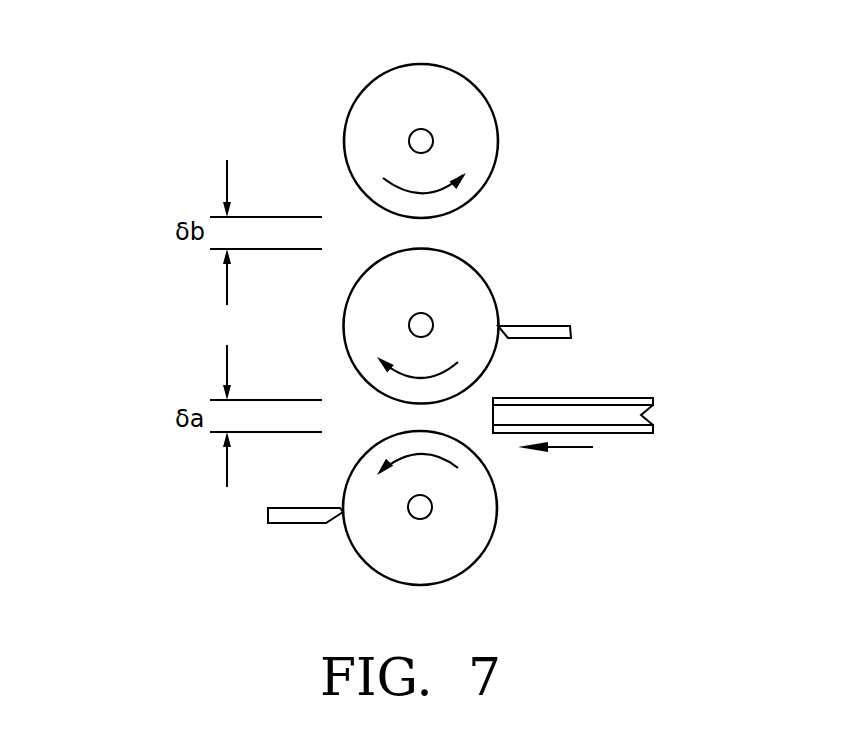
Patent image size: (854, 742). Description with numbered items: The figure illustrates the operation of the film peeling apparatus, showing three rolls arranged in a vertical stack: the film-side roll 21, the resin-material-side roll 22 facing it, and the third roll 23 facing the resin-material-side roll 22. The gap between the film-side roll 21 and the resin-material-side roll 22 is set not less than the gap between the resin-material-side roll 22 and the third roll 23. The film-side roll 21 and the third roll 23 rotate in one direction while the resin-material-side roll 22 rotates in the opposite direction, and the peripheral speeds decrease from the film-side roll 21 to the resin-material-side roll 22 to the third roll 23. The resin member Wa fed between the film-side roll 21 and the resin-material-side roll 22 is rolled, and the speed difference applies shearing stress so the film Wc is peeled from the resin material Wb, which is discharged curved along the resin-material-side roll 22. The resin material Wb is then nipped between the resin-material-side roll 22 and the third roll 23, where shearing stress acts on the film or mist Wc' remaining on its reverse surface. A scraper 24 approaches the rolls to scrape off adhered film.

The film-side roll 21 is at (472, 548).
The resin-material-side roll 22 is at (470, 293).
The third roll 23 is at (453, 96).
The scraper 24 is at (560, 328).
The resin member Wa is at (649, 332).
The resin material Wb is at (640, 413).
The film Wc is at (657, 472).
The film or mist Wc' is at (676, 377).